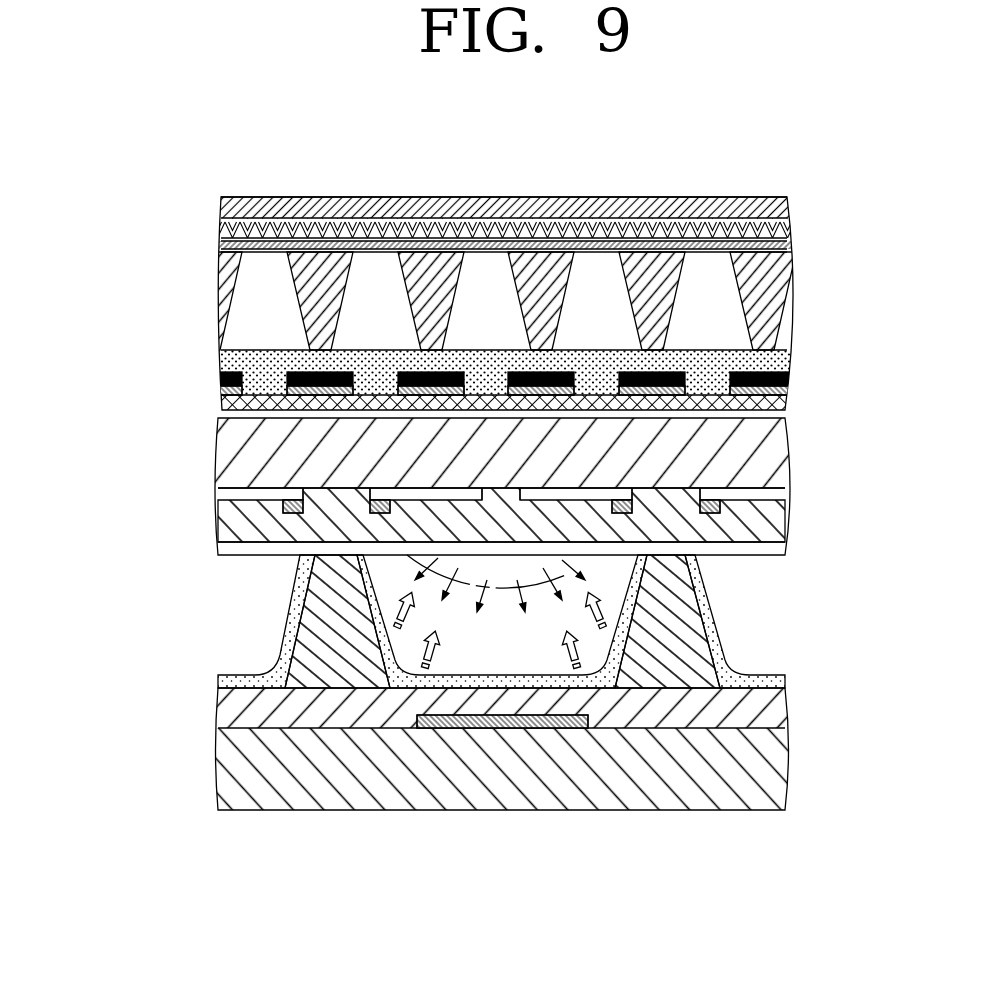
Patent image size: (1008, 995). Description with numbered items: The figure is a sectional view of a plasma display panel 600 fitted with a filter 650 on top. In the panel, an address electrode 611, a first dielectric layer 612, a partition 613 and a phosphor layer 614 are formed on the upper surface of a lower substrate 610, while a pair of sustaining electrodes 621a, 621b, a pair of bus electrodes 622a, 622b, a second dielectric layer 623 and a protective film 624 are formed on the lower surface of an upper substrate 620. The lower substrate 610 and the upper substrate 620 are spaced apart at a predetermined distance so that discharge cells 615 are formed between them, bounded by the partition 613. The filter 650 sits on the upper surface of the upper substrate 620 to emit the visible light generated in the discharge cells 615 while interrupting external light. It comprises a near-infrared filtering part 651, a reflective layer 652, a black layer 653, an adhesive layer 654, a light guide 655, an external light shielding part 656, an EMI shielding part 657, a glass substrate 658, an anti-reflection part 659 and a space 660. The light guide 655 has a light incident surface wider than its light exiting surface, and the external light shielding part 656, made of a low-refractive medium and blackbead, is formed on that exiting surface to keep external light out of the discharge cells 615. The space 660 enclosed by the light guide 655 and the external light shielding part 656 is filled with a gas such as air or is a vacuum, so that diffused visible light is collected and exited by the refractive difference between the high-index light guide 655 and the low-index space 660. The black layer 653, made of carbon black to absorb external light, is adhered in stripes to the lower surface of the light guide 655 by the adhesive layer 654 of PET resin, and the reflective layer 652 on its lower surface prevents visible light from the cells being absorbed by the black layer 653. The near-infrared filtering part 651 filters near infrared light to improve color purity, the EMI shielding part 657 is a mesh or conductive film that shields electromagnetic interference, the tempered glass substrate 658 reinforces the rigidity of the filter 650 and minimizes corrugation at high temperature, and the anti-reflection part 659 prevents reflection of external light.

The display panel lower structure 600 is at (455, 622).
The lower substrate 610 is at (228, 777).
The address electrode 611 is at (470, 730).
The first dielectric layer 612 is at (228, 712).
The partition 613 is at (690, 667).
The phosphor layer 614 is at (710, 628).
The discharge cells 615 is at (500, 611).
The upper substrate 620 is at (765, 452).
The sustaining electrode 621a is at (385, 493).
The sustaining electrode 621b is at (300, 488).
The bus electrode 622a is at (373, 515).
The bus electrode 622b is at (285, 508).
The second dielectric layer 623 is at (770, 520).
The protective film 624 is at (790, 548).
The filter 650 is at (457, 275).
The near-infrared filtering part 651 is at (467, 402).
The reflective layer 652 is at (222, 385).
The black layer 653 is at (283, 377).
The adhesive layer 654 is at (787, 360).
The light guide 655 is at (712, 272).
The external light shielding part 656 is at (787, 249).
The EMI shielding part 657 is at (221, 245).
The glass substrate 658 is at (227, 220).
The anti-reflection part 659 is at (265, 198).
The space 660 is at (770, 268).